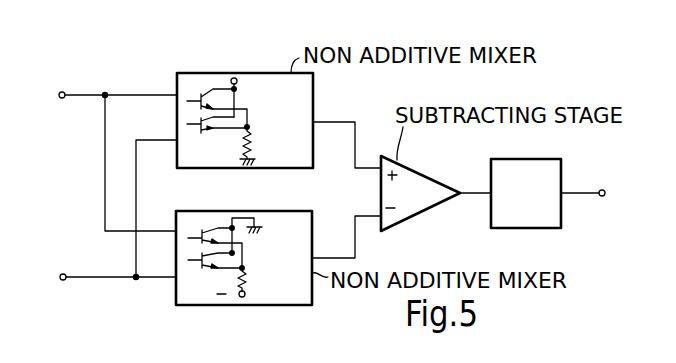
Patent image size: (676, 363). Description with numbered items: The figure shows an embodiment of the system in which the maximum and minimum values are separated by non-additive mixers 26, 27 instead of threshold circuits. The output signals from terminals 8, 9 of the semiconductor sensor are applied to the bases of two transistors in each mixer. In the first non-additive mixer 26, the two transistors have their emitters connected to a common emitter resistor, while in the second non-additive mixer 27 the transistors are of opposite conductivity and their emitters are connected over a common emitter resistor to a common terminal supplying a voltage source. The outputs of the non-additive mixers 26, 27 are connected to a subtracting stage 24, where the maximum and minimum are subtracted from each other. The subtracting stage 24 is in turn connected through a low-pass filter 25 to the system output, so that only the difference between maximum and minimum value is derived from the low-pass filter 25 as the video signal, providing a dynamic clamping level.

The terminal 8 is at (117, 146).
The terminal 9 is at (117, 210).
The non-additive mixer 26 is at (261, 120).
The non-additive mixer 27 is at (258, 253).
The subtracting stage 24 is at (420, 191).
The low-pass filter 25 is at (526, 181).